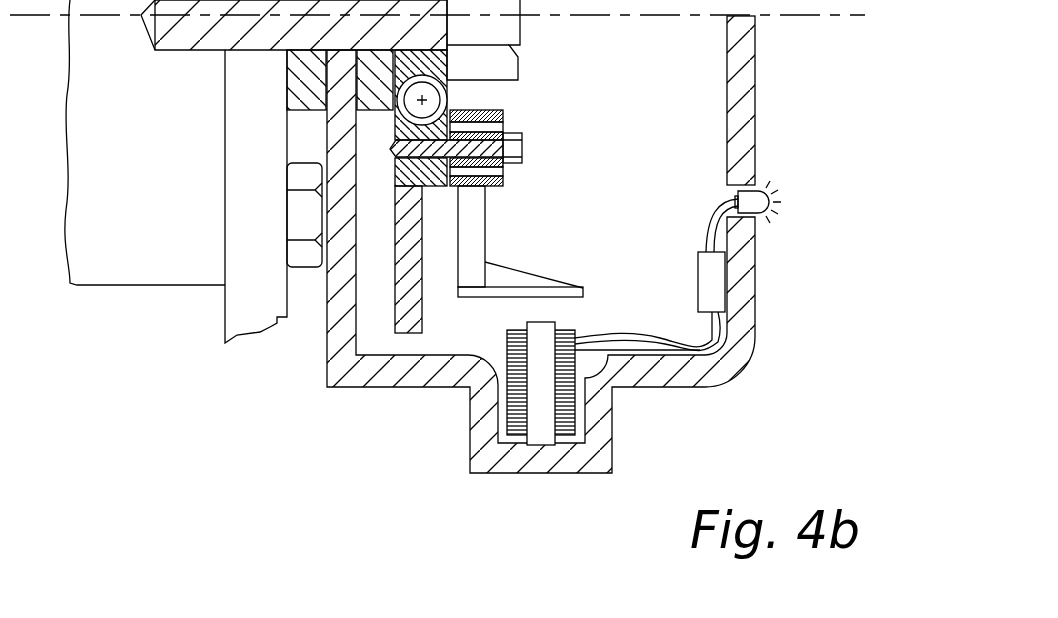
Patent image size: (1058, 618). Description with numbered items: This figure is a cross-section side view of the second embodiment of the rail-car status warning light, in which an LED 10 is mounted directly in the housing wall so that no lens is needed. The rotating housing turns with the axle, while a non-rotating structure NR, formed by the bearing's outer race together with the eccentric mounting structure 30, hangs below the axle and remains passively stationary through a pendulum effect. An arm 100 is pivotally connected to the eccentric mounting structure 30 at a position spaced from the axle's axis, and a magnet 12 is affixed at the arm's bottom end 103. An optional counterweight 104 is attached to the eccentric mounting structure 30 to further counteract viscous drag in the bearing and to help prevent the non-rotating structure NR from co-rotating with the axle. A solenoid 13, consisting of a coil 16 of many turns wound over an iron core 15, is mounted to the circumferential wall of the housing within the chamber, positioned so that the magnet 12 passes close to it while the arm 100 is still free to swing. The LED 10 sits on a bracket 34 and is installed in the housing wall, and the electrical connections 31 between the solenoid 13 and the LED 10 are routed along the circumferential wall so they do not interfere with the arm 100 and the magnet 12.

The LED 10 is at (760, 186).
The magnet 12 is at (523, 288).
The solenoid 13 is at (580, 342).
The iron core 15 is at (540, 364).
The coil 16 is at (507, 345).
The eccentric mounting structure 30 is at (395, 186).
The electrical connections 31 is at (708, 340).
The bracket 34 is at (698, 285).
The arm 100 is at (536, 233).
The arm's bottom end 103 is at (486, 250).
The counterweight 104 is at (407, 333).
The non-rotating structure NR is at (503, 118).